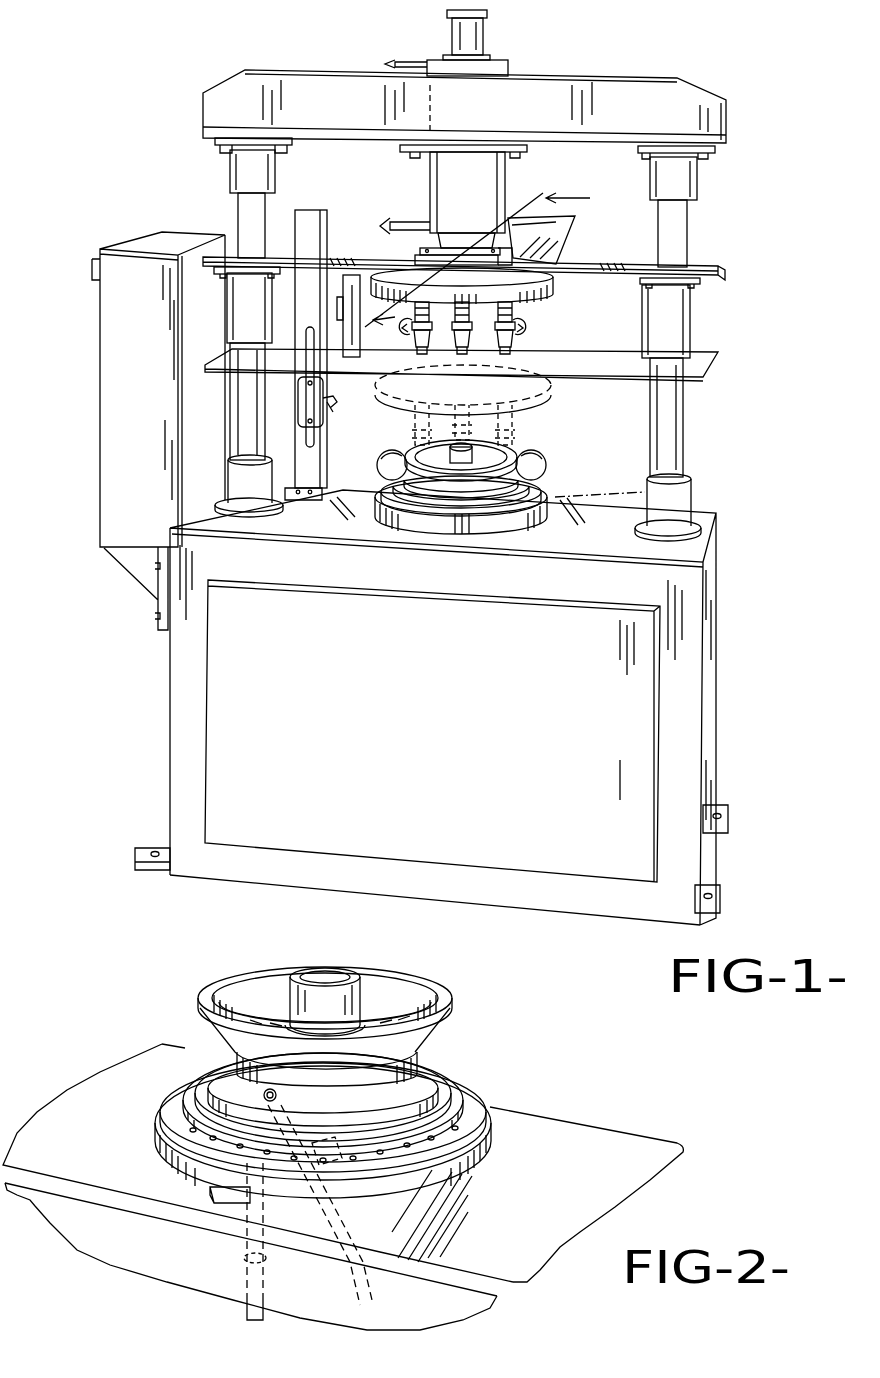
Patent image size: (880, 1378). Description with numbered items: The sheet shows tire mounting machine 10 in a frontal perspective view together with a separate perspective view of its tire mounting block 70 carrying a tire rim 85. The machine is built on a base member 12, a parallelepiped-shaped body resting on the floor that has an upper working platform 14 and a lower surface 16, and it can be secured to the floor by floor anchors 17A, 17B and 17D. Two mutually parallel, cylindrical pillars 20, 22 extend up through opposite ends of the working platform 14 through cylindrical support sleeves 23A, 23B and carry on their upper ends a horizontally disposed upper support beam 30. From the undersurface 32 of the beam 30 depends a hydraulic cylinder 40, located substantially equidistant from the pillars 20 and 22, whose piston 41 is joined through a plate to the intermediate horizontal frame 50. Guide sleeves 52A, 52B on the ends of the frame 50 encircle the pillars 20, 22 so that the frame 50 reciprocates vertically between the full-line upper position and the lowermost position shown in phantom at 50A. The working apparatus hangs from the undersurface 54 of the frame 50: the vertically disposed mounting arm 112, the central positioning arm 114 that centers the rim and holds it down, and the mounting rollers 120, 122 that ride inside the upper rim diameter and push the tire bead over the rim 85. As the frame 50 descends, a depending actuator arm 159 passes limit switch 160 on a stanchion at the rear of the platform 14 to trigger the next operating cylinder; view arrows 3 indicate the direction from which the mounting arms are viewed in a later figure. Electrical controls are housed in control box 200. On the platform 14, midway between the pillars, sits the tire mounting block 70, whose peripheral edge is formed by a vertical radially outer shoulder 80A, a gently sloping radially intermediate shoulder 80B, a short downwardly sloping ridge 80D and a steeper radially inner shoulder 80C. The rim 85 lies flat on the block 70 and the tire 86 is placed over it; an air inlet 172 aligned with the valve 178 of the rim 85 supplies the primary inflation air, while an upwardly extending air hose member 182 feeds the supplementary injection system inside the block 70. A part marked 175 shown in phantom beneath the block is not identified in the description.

In FIG. 1, the tire mounting machine 10 is at (726, 606).
In FIG. 1, the base member 12 is at (690, 691).
In FIG. 1, the upper working platform 14 is at (600, 496).
In FIG. 2, the upper working platform 14 is at (652, 1142).
In FIG. 1, the lower surface 16 is at (540, 907).
In FIG. 1, the floor anchor 17A is at (722, 892).
In FIG. 1, the floor anchor 17B is at (731, 816).
In FIG. 1, the floor anchor 17D is at (138, 841).
In FIG. 1, the vertically extending pillar 20 is at (250, 410).
In FIG. 1, the vertically extending pillar 22 is at (675, 416).
In FIG. 1, the cylindrical support sleeve 23A is at (238, 477).
In FIG. 1, the cylindrical support sleeve 23B is at (694, 496).
In FIG. 1, the upper support beam 30 is at (542, 84).
In FIG. 1, the undersurface of beam 32 is at (558, 146).
In FIG. 1, the hydraulic cylinder 40 is at (430, 175).
In FIG. 1, the piston 41 is at (470, 244).
In FIG. 1, the section line 3- 3 is at (476, 250).
In FIG. 1, the horizontal frame 50 is at (652, 272).
In FIG. 1, the lowermost frame position 50A is at (718, 358).
In FIG. 1, the guide sleeve 52A is at (250, 304).
In FIG. 1, the guide sleeve 52B is at (686, 304).
In FIG. 1, the undersurface of frame 54 is at (578, 284).
In FIG. 1, the mounting arm 112 is at (516, 313).
In FIG. 1, the positioning arm 114 is at (482, 358).
In FIG. 1, the mounting roller 120 is at (416, 356).
In FIG. 1, the mounting roller 122 is at (514, 361).
In FIG. 1, the actuator arm 159 is at (343, 289).
In FIG. 1, the limit switch 160 is at (334, 410).
In FIG. 1, the control box 200 is at (102, 440).
In FIG. 1, the tire rim 85 is at (520, 448).
In FIG. 2, the tire rim 85 is at (392, 990).
In FIG. 1, the tire 86 is at (547, 471).
In FIG. 2, the tire mounting block 70 is at (514, 1139).
In FIG. 2, the radially outer shoulder 80A is at (158, 1146).
In FIG. 2, the radially intermediate shoulder 80B is at (165, 1115).
In FIG. 2, the radially inner shoulder 80C is at (196, 1090).
In FIG. 2, the downwardly sloping ridge 80D is at (192, 1095).
In FIG. 2, the air inlet 172 is at (288, 1101).
In FIG. 2, the bolt 175 is at (346, 1228).
In FIG. 2, the valve 178 is at (280, 1092).
In FIG. 2, the air hose member 182 is at (238, 1272).